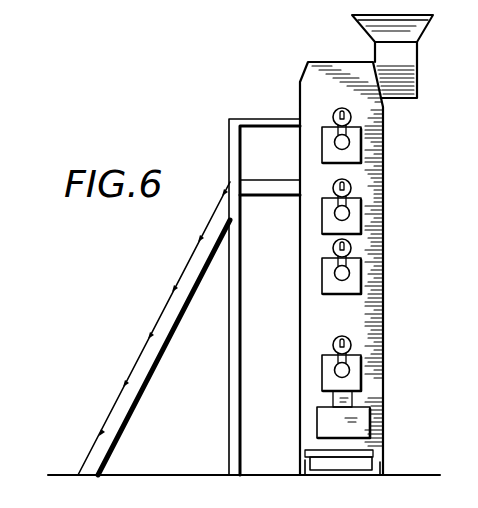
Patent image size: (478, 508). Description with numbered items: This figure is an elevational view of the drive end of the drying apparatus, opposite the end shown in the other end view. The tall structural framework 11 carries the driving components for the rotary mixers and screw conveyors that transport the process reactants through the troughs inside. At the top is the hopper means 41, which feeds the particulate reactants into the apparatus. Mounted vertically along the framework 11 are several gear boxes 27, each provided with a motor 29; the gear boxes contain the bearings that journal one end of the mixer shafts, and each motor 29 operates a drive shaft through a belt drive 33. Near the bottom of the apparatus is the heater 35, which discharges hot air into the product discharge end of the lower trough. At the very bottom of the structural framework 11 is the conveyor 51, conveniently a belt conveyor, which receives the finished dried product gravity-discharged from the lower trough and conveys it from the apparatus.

The structural framework 11 is at (310, 80).
The hopper means 41 is at (428, 19).
The motor 29 is at (352, 117).
The belt drive 33 is at (362, 138).
The gear box 27 is at (362, 163).
The heater 35 is at (362, 428).
The conveyor 51 is at (375, 453).